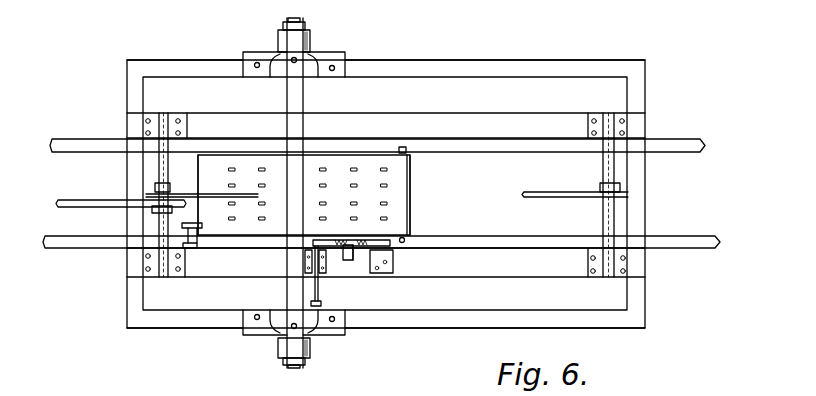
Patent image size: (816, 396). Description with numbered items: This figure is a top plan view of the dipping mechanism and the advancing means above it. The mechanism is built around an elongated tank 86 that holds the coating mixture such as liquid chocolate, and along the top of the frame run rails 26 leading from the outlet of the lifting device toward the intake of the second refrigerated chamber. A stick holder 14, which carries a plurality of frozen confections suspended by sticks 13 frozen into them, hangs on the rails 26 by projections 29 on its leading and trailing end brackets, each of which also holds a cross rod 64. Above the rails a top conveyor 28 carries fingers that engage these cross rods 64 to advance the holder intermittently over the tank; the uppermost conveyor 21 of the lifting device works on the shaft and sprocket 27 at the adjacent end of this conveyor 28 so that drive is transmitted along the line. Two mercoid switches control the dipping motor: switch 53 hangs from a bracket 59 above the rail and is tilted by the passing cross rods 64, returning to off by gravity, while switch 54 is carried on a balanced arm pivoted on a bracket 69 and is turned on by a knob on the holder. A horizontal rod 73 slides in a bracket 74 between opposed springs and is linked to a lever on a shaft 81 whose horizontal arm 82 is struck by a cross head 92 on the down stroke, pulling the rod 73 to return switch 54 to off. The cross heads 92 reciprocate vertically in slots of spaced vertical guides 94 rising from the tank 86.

The sticks 13 is at (354, 168).
The stick holder 14 is at (268, 162).
The uppermost conveyor 21 is at (78, 205).
The rails 26 is at (680, 142).
The sprocket 27 is at (154, 187).
The top conveyor 28 is at (553, 200).
The projections 29 is at (404, 147).
The switch 53 is at (208, 232).
The switch 54 is at (400, 257).
The bracket 59 is at (192, 249).
The cross rod 64 is at (203, 166).
The bracket 69 is at (386, 275).
The horizontal rod 73 is at (331, 251).
The bracket 74 is at (350, 262).
The shaft 81 is at (320, 289).
The horizontal arm 82 is at (321, 303).
The tank 86 is at (600, 66).
The cross head 92 is at (312, 44).
The vertical guides 94 is at (252, 57).